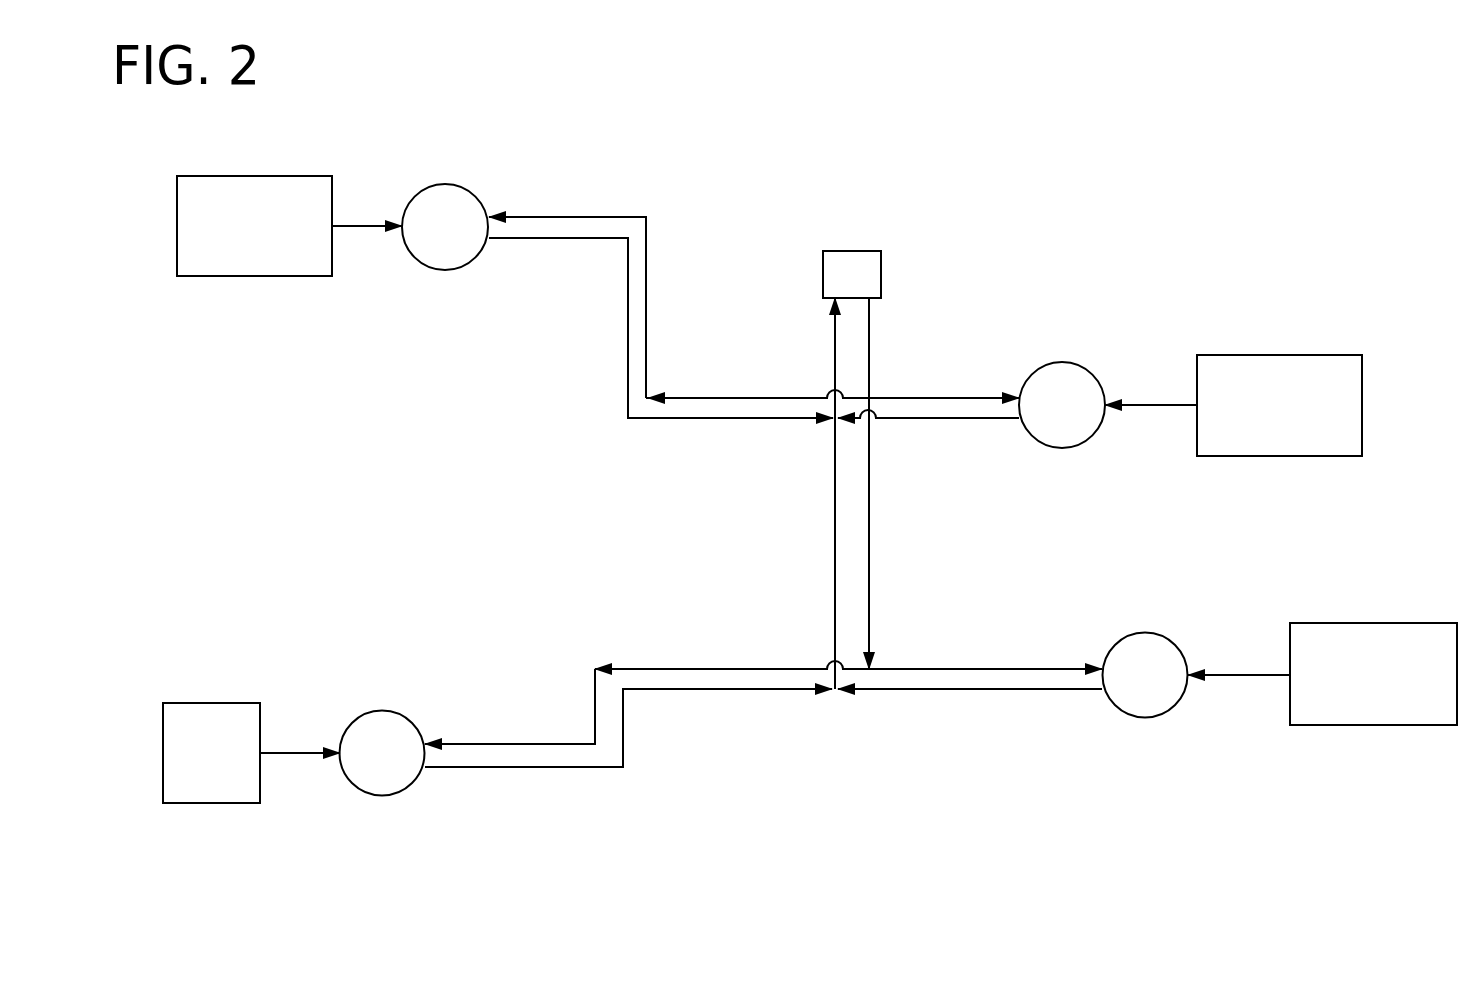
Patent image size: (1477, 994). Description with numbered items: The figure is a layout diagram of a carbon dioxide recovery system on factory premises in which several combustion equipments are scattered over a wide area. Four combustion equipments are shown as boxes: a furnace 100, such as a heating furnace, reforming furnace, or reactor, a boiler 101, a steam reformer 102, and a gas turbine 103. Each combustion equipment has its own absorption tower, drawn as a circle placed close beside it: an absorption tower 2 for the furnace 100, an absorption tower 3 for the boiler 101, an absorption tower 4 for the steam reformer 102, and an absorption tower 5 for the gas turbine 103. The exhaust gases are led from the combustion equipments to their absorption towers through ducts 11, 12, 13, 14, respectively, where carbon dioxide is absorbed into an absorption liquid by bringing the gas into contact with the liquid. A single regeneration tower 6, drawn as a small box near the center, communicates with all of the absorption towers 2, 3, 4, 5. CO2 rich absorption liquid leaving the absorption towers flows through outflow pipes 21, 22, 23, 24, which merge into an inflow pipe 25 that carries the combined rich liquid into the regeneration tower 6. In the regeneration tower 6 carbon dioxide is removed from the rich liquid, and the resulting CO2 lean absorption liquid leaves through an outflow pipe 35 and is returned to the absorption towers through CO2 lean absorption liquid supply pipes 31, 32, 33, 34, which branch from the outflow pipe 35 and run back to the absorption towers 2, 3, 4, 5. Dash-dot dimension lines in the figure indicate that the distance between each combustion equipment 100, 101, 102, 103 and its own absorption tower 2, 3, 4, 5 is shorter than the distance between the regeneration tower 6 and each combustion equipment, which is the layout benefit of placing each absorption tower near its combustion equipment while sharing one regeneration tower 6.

The furnace 100 is at (232, 176).
The boiler 101 is at (710, 569).
The steam reformer 102 is at (1380, 623).
The gas turbine 103 is at (1292, 355).
The absorption tower 2 is at (453, 184).
The absorption tower 3 is at (386, 795).
The absorption tower 4 is at (1138, 632).
The absorption tower 5 is at (1030, 372).
The regeneration tower 6 is at (858, 251).
The duct 11 is at (394, 226).
The duct 12 is at (290, 757).
The duct 13 is at (1240, 672).
The duct 14 is at (1148, 408).
The outflow pipe 21 is at (628, 335).
The outflow pipe 22 is at (534, 768).
The outflow pipe 23 is at (1014, 690).
The outflow pipe 24 is at (922, 420).
The inflow pipe 25 is at (835, 352).
The CO2 lean absorption liquid supply pipe 31 is at (607, 217).
The CO2 lean absorption liquid supply pipe 32 is at (503, 743).
The CO2 lean absorption liquid supply pipe 33 is at (978, 668).
The CO2 lean absorption liquid supply pipe 34 is at (980, 396).
The outflow pipe 35 is at (869, 350).